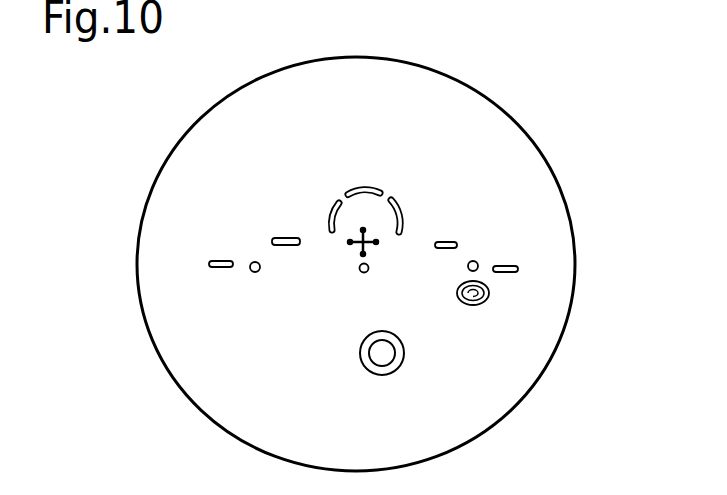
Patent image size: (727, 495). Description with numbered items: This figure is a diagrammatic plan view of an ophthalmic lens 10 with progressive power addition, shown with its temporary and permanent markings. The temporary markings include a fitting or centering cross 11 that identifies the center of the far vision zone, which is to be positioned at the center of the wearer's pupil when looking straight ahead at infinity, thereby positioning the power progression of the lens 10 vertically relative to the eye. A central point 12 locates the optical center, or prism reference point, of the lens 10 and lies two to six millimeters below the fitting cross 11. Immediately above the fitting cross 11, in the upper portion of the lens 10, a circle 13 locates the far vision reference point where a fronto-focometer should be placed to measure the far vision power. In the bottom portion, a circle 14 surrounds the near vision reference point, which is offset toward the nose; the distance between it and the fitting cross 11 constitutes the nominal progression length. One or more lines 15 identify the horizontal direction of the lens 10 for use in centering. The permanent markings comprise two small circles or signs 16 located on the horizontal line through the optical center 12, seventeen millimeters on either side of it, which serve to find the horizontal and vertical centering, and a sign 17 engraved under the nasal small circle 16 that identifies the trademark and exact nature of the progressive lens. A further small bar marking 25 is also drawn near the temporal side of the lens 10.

The lens 10 is at (537, 150).
The fitting cross 11 is at (366, 238).
The central point 12 is at (360, 272).
The circle for measuring the far vision power 13 is at (368, 186).
The circle for measuring the near vision power 14 is at (380, 375).
The lines 15 is at (278, 237).
The small circles or signs 16 is at (251, 263).
The sign 17 is at (488, 303).
The rectangular bar mark 25 is at (363, 284).